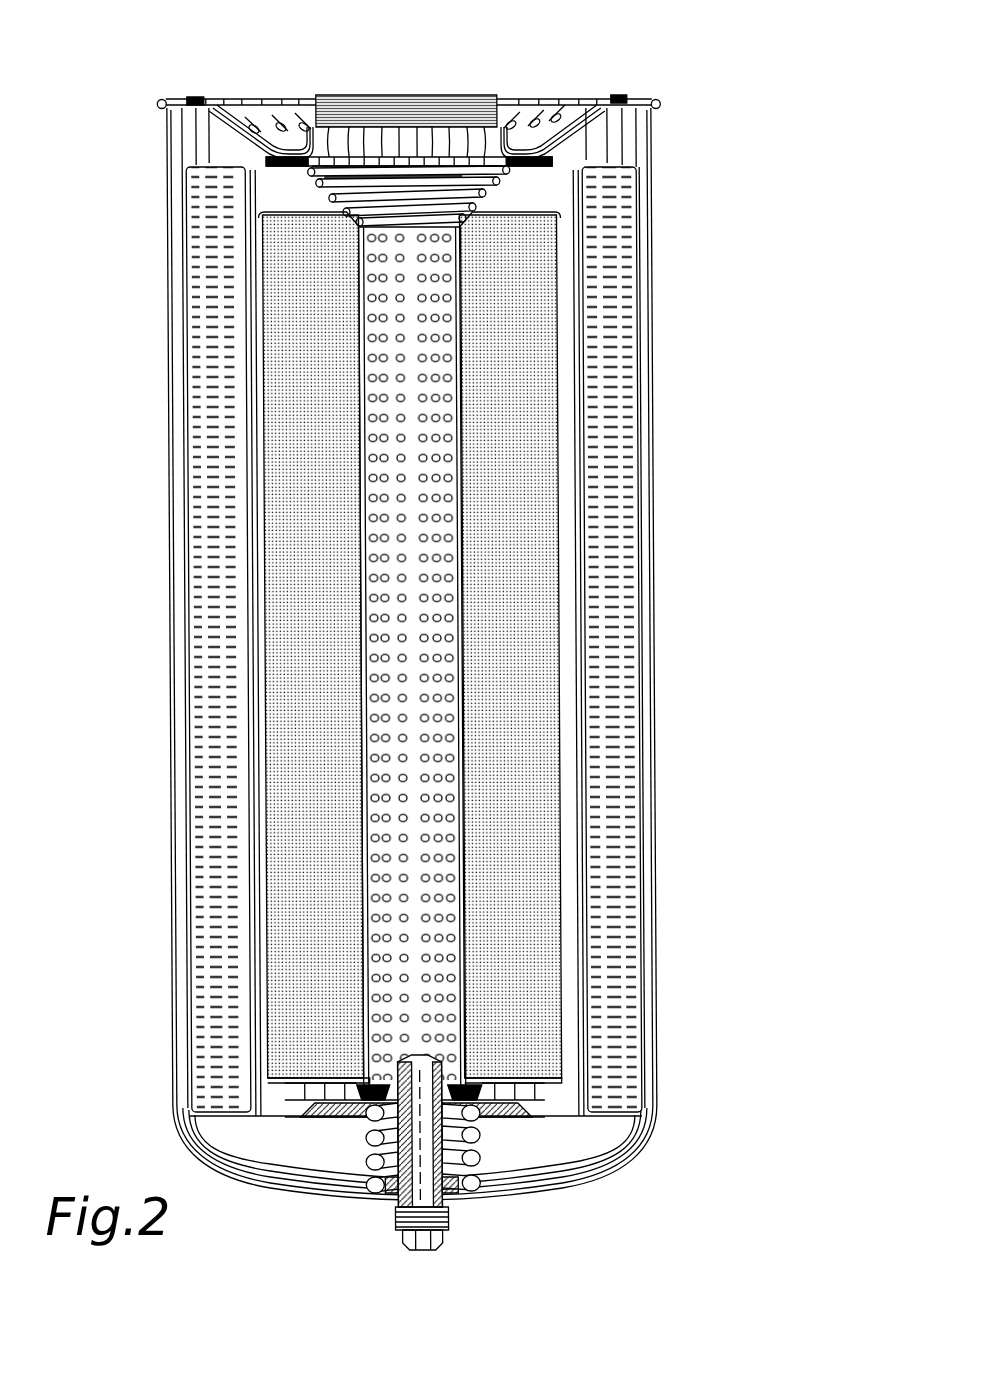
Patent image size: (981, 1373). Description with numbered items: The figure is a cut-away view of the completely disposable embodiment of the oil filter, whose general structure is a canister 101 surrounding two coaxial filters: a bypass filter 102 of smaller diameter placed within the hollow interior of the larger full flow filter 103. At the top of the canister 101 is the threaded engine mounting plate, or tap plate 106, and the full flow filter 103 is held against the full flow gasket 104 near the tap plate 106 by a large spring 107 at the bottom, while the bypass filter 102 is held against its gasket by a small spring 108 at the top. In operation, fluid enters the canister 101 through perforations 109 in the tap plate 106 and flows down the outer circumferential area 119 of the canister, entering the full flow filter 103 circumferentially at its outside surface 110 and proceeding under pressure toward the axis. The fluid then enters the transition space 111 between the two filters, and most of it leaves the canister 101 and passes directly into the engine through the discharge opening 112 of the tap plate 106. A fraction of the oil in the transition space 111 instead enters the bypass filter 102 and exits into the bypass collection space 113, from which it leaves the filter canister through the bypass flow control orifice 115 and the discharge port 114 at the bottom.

The canister 101 is at (650, 300).
The bypass filter 102 is at (308, 388).
The full flow filter 103 is at (212, 497).
The full flow gasket 104 is at (550, 158).
The tap plate 106 is at (527, 75).
The large spring 107 is at (456, 1136).
The small spring 108 is at (498, 186).
The perforations 109 is at (305, 122).
The outside surface 110 is at (642, 600).
The transition space 111 is at (257, 448).
The discharge opening 112 is at (406, 110).
The bypass collection space 113 is at (413, 859).
The discharge port 114 is at (446, 1217).
The bypass flow control orifice 115 is at (413, 1053).
The outer circumferential area 119 is at (178, 326).